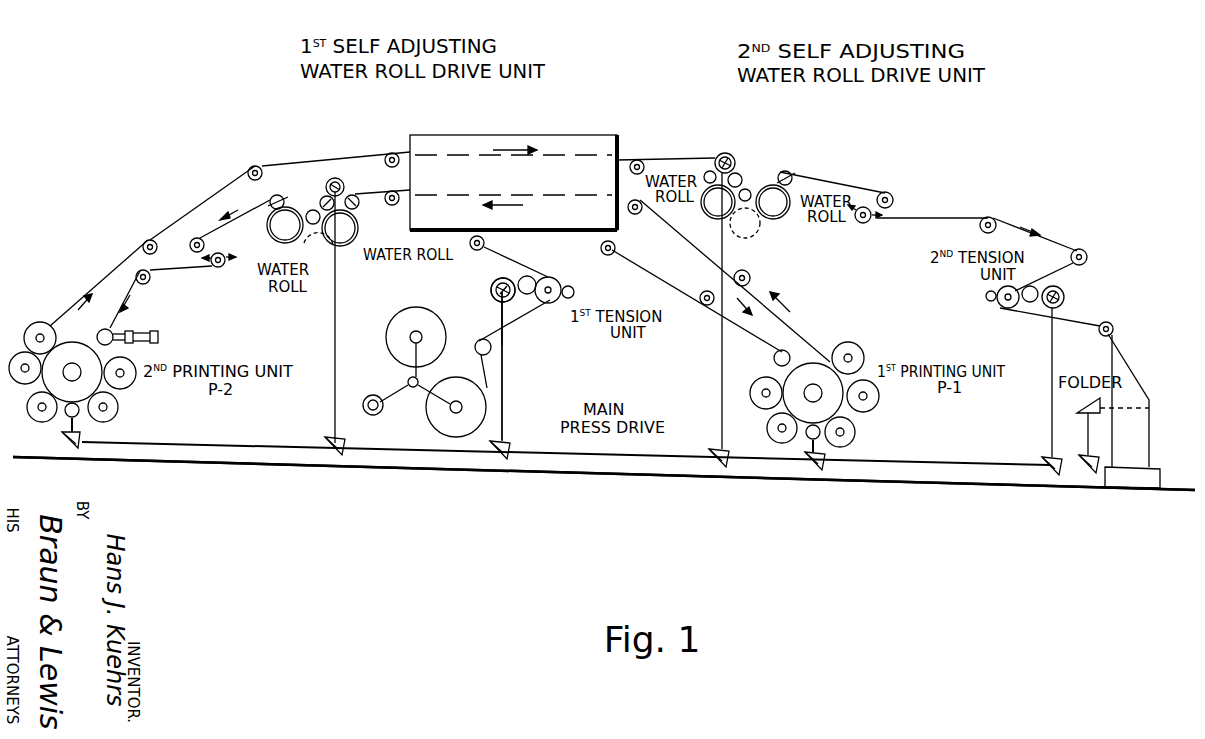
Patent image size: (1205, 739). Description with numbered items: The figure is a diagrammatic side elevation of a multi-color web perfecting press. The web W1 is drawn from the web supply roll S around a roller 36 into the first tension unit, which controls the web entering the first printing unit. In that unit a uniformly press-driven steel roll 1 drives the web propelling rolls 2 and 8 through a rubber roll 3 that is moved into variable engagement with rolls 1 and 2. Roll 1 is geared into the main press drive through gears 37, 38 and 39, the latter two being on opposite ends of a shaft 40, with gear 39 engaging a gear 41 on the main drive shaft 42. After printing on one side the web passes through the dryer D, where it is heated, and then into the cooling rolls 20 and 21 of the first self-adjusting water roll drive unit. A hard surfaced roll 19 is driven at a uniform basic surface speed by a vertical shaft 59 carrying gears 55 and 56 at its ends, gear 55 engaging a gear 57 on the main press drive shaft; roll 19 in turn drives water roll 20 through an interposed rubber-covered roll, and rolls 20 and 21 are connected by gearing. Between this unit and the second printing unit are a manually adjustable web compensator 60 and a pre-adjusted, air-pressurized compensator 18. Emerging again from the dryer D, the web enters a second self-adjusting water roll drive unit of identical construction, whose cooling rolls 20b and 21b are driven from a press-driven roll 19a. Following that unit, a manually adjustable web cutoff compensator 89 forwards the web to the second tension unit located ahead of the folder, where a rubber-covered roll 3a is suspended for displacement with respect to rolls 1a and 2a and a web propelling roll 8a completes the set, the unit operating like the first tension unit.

The steel roll 1 is at (495, 280).
The web propelling roll 2 is at (552, 287).
The rubber roll 3 is at (530, 280).
The web propelling roll 8 is at (574, 289).
The air-pressurized compensator 18 is at (137, 333).
The hard surfaced roll 19 is at (332, 187).
The press-driven roll 19a is at (722, 152).
The cooling roll 20 is at (360, 230).
The cooling roll 20b is at (700, 217).
The cooling roll 21 is at (268, 227).
The cooling roll 21b is at (778, 220).
The roller 36 is at (477, 343).
The gear 37 is at (491, 291).
The gear 38 is at (500, 296).
The gear 39 is at (507, 440).
The shaft 40 is at (502, 347).
The gear 41 is at (493, 467).
The main drive shaft 42 is at (600, 472).
The gear 55 is at (327, 437).
The gear 56 is at (346, 195).
The gear 57 is at (345, 443).
The vertical shaft 59 is at (335, 312).
The manually adjustable web compensator 60 is at (219, 267).
The web cutoff compensator 89 is at (864, 224).
The roll 1a is at (1067, 300).
The roll 2a is at (1007, 308).
The rubber-covered roll 3a is at (1047, 287).
The web propelling roll 8a is at (990, 302).
The dryer D is at (585, 137).
The web supply roll S is at (430, 413).
The web W1 is at (480, 367).